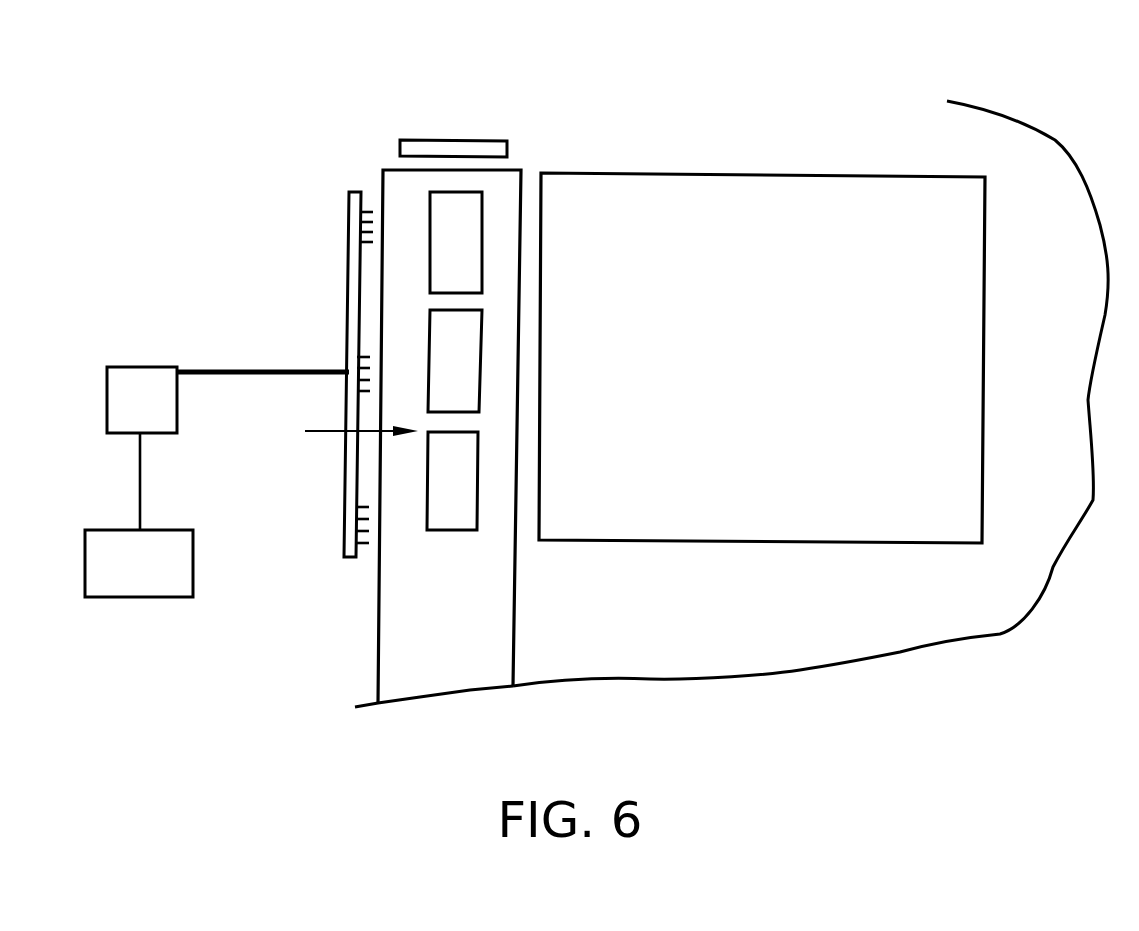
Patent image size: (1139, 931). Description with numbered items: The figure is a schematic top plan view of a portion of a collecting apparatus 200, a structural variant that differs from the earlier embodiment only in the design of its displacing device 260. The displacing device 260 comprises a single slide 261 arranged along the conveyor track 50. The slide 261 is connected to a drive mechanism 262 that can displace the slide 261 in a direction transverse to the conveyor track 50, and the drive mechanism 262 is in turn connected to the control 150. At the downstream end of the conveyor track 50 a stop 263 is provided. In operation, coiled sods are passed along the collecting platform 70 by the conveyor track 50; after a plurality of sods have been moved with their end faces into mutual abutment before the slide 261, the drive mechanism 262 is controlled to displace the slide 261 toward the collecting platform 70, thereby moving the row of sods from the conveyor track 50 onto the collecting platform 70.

The conveyor track 50 is at (407, 573).
The collecting platform 70 is at (766, 379).
The control 150 is at (167, 581).
The collecting apparatus 200 is at (733, 140).
The displacing device 260 is at (337, 160).
The slide 261 is at (348, 213).
The drive mechanism 262 is at (169, 416).
The stop 263 is at (447, 148).